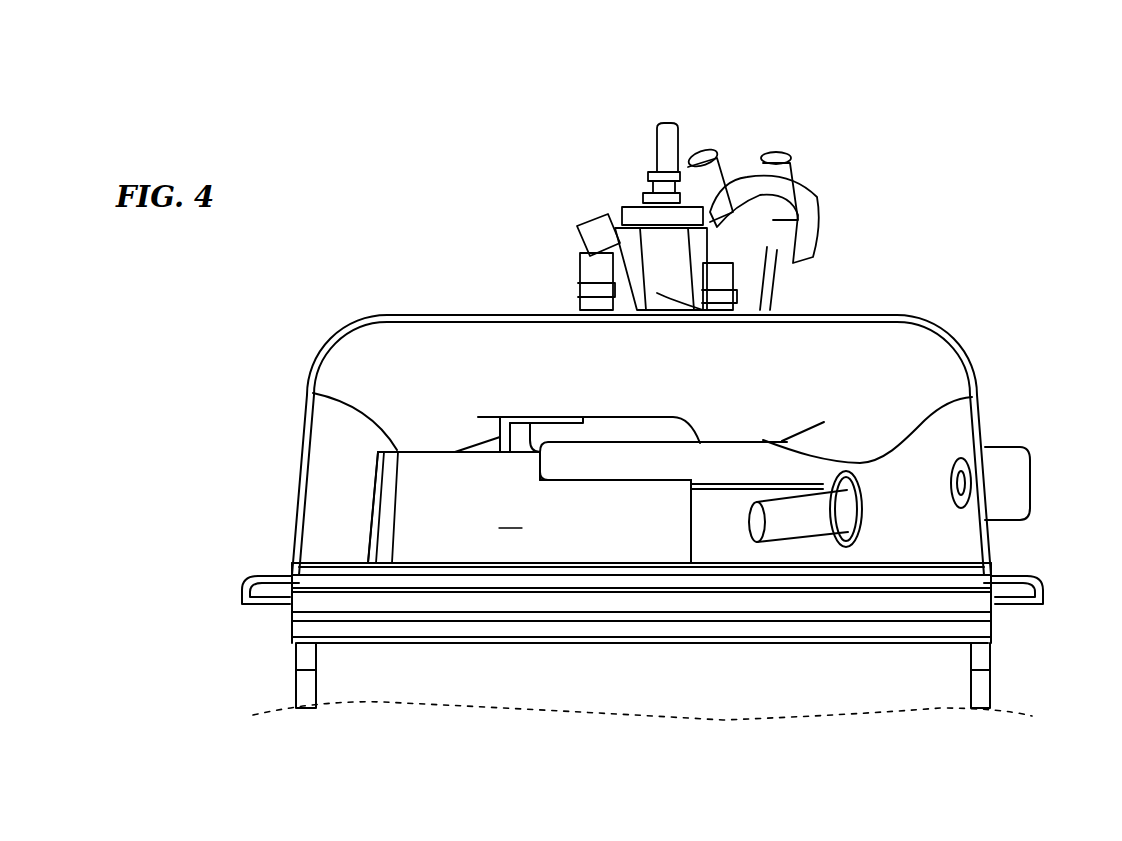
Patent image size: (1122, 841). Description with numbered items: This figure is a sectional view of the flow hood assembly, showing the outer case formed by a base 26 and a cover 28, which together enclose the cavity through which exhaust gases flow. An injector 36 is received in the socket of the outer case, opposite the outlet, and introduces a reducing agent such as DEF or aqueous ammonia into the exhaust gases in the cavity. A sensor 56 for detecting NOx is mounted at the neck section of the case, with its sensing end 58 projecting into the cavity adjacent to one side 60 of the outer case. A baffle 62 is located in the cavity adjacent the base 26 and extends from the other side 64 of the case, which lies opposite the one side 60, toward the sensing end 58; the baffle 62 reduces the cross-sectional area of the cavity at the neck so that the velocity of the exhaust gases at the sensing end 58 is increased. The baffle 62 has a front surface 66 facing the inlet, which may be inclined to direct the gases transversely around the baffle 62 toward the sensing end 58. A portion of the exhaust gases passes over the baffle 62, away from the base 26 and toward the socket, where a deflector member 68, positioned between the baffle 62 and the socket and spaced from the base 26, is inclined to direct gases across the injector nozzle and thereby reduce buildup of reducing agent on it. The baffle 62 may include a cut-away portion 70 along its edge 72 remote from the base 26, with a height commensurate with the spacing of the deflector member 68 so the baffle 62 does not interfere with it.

The base 26 is at (245, 592).
The cover 28 is at (307, 377).
The injector 36 is at (725, 163).
The sensor 56 is at (822, 518).
The sensing end 58 is at (756, 520).
The one side 60 is at (893, 537).
The baffle 62 is at (423, 490).
The other side 64 is at (355, 528).
The front surface 66 is at (529, 507).
The deflector member 68 is at (793, 462).
The cut-away portion 70 is at (622, 473).
The edge 72 is at (453, 452).